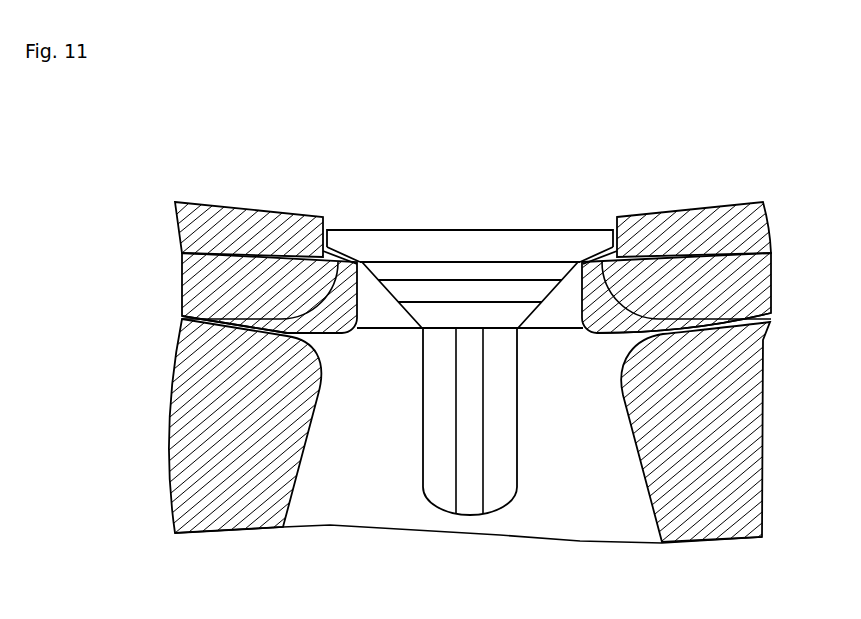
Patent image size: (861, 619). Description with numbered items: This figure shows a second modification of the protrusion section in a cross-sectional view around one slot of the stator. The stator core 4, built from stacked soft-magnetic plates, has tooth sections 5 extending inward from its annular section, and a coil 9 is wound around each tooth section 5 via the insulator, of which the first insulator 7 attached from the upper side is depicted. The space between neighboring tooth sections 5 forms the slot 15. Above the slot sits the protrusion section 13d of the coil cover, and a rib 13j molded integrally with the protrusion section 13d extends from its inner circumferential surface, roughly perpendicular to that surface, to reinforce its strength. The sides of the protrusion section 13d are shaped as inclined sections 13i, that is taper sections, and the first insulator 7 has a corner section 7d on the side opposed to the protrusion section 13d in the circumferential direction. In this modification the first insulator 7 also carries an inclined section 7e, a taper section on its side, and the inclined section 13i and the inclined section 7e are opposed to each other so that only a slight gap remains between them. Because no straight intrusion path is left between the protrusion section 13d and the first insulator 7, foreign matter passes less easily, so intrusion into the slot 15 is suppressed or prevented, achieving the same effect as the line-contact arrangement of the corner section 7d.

The stator core 4 is at (473, 207).
The tooth section 5 is at (242, 218).
The first insulator 7 is at (190, 283).
The corner section 7d is at (358, 260).
The inclined section 7e is at (185, 322).
The coil 9 is at (190, 436).
The protrusion section 13d is at (477, 238).
The inclined section 13i is at (336, 250).
The rib 13j is at (467, 500).
The slot 15 is at (353, 517).